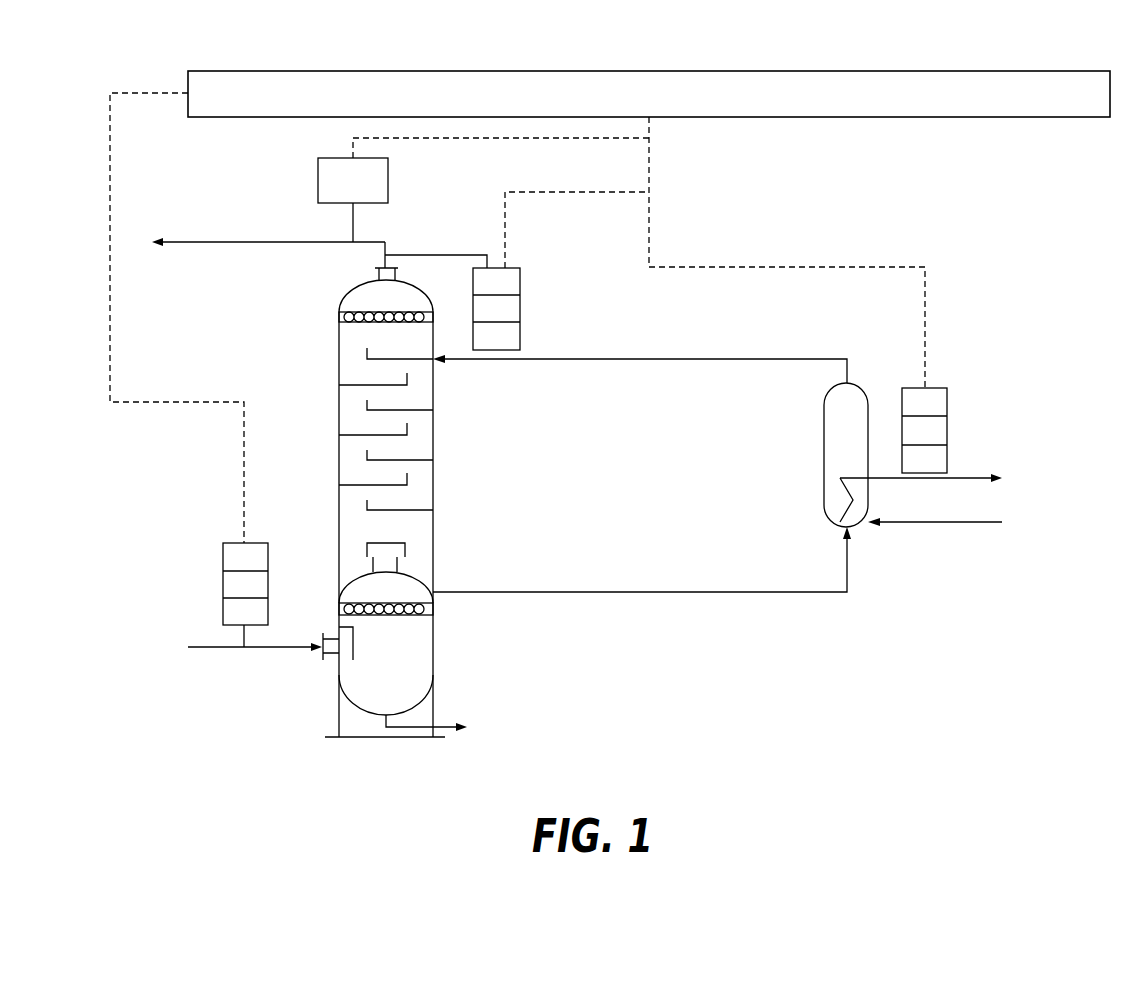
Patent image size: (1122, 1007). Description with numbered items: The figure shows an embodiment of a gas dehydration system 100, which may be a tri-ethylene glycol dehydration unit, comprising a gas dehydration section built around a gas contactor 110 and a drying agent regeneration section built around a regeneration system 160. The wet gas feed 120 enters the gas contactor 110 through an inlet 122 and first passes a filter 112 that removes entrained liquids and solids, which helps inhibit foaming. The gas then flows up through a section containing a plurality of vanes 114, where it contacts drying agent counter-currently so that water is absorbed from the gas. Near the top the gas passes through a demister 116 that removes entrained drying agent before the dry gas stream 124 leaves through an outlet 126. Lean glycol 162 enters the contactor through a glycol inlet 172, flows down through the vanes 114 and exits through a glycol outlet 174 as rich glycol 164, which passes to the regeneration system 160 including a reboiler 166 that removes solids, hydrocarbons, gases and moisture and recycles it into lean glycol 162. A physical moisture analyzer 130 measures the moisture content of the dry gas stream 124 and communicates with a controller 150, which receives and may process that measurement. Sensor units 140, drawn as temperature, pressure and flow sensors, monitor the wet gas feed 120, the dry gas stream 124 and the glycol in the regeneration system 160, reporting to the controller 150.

The gas dehydration system 100 is at (975, 192).
The gas contactor 110 is at (403, 773).
The filter 112 is at (415, 617).
The vanes 114 is at (412, 460).
The demister 116 is at (347, 322).
The wet gas feed 120 is at (223, 650).
The inlet 122 is at (330, 661).
The dry gas stream 124 is at (252, 243).
The outlet 126 is at (400, 257).
The physical moisture analyzer 130 is at (371, 194).
The sensor unit 140 is at (233, 543).
The controller 150 is at (624, 82).
The regeneration system 160 is at (855, 528).
The lean glycol 162 is at (620, 357).
The rich glycol 164 is at (655, 594).
The reboiler 166 is at (970, 478).
The glycol inlet 172 is at (437, 365).
The glycol outlet 174 is at (436, 590).